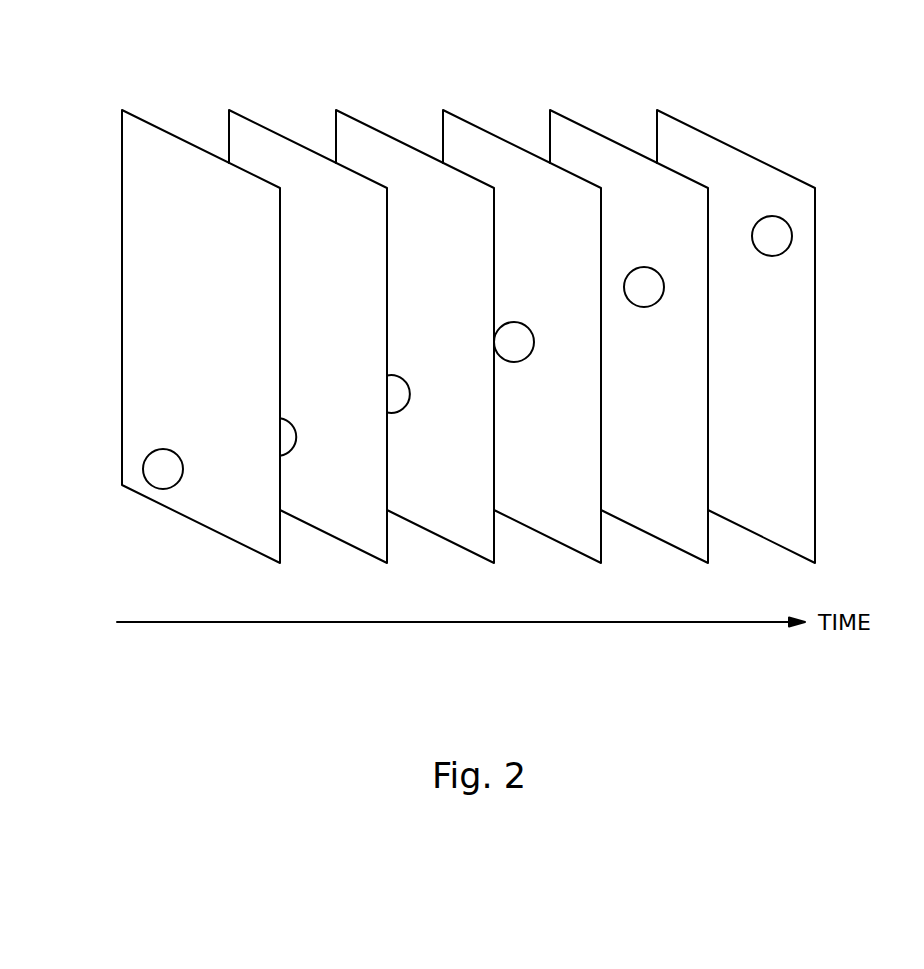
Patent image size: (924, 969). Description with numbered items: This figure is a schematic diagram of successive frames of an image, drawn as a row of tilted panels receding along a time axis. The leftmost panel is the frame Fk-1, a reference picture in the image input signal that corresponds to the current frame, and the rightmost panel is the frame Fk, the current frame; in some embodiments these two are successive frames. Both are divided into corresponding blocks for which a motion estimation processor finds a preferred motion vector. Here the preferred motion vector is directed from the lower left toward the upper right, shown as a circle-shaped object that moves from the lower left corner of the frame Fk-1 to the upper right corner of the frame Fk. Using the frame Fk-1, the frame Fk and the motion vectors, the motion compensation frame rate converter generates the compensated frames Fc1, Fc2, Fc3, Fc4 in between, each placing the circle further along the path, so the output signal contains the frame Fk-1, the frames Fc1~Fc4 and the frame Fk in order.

The reference frame Fk-1 is at (138, 112).
The first compensated frame Fc1 is at (245, 112).
The second compensated frame Fc2 is at (352, 112).
The third compensated frame Fc3 is at (459, 112).
The fourth compensated frame Fc4 is at (566, 112).
The current frame Fk is at (673, 112).